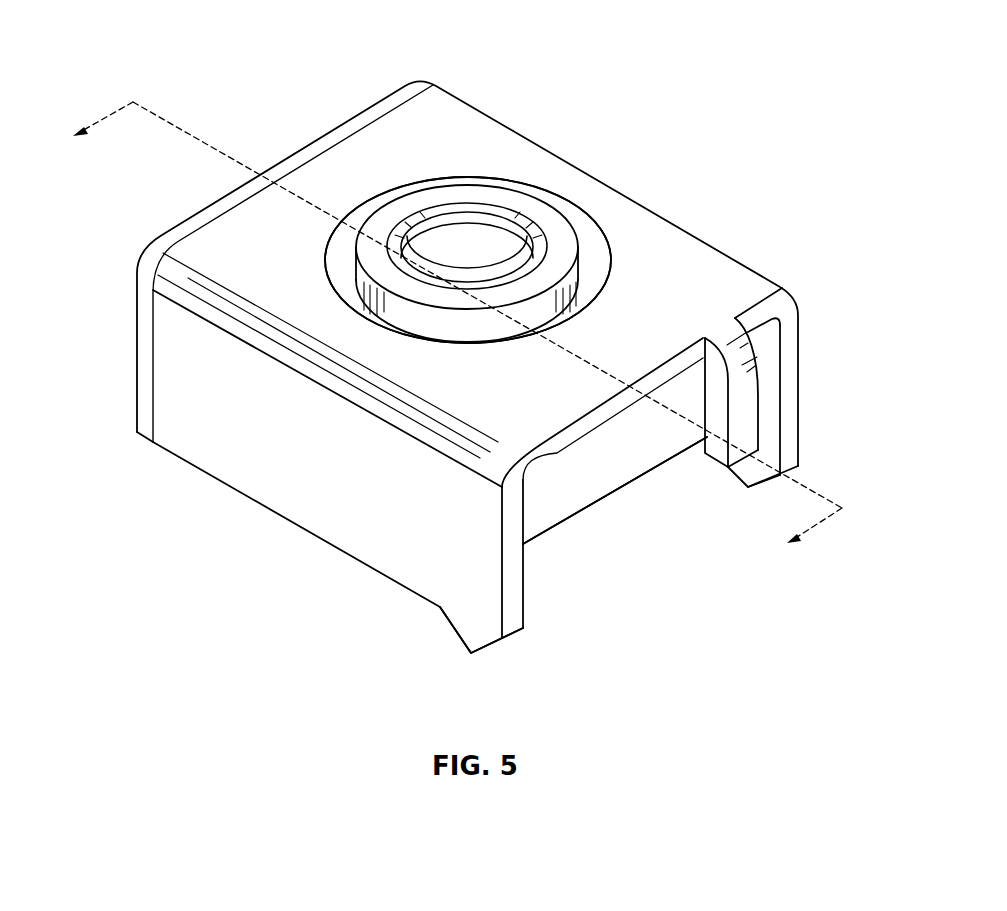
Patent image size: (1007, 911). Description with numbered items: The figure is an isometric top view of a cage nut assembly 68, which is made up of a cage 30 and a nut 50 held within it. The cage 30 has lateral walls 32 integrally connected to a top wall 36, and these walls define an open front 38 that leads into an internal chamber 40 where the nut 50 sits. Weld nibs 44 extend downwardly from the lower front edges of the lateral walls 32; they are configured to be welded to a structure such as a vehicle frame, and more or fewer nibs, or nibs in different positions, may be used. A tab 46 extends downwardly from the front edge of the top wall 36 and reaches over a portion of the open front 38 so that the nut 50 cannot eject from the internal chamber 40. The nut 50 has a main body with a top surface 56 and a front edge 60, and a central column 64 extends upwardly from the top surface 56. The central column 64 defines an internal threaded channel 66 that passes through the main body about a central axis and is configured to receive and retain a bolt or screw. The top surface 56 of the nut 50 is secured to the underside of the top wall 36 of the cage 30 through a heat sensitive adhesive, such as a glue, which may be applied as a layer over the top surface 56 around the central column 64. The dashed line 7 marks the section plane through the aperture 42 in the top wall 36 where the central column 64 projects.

The section line 7- 7 is at (447, 334).
The cage 30 is at (368, 103).
The lateral walls 32 is at (297, 452).
The top wall 36 is at (460, 133).
The open front 38 is at (682, 491).
The internal chamber 40 is at (545, 550).
The aperture in top plate 42 is at (397, 187).
The weld nibs 44 is at (470, 633).
The tab 46 is at (750, 377).
The nut 50 is at (592, 270).
The top surface 56 is at (333, 263).
The front edge 60 is at (600, 465).
The central column 64 is at (550, 207).
The threaded channel 66 is at (495, 237).
The cage nut assembly 68 is at (245, 74).